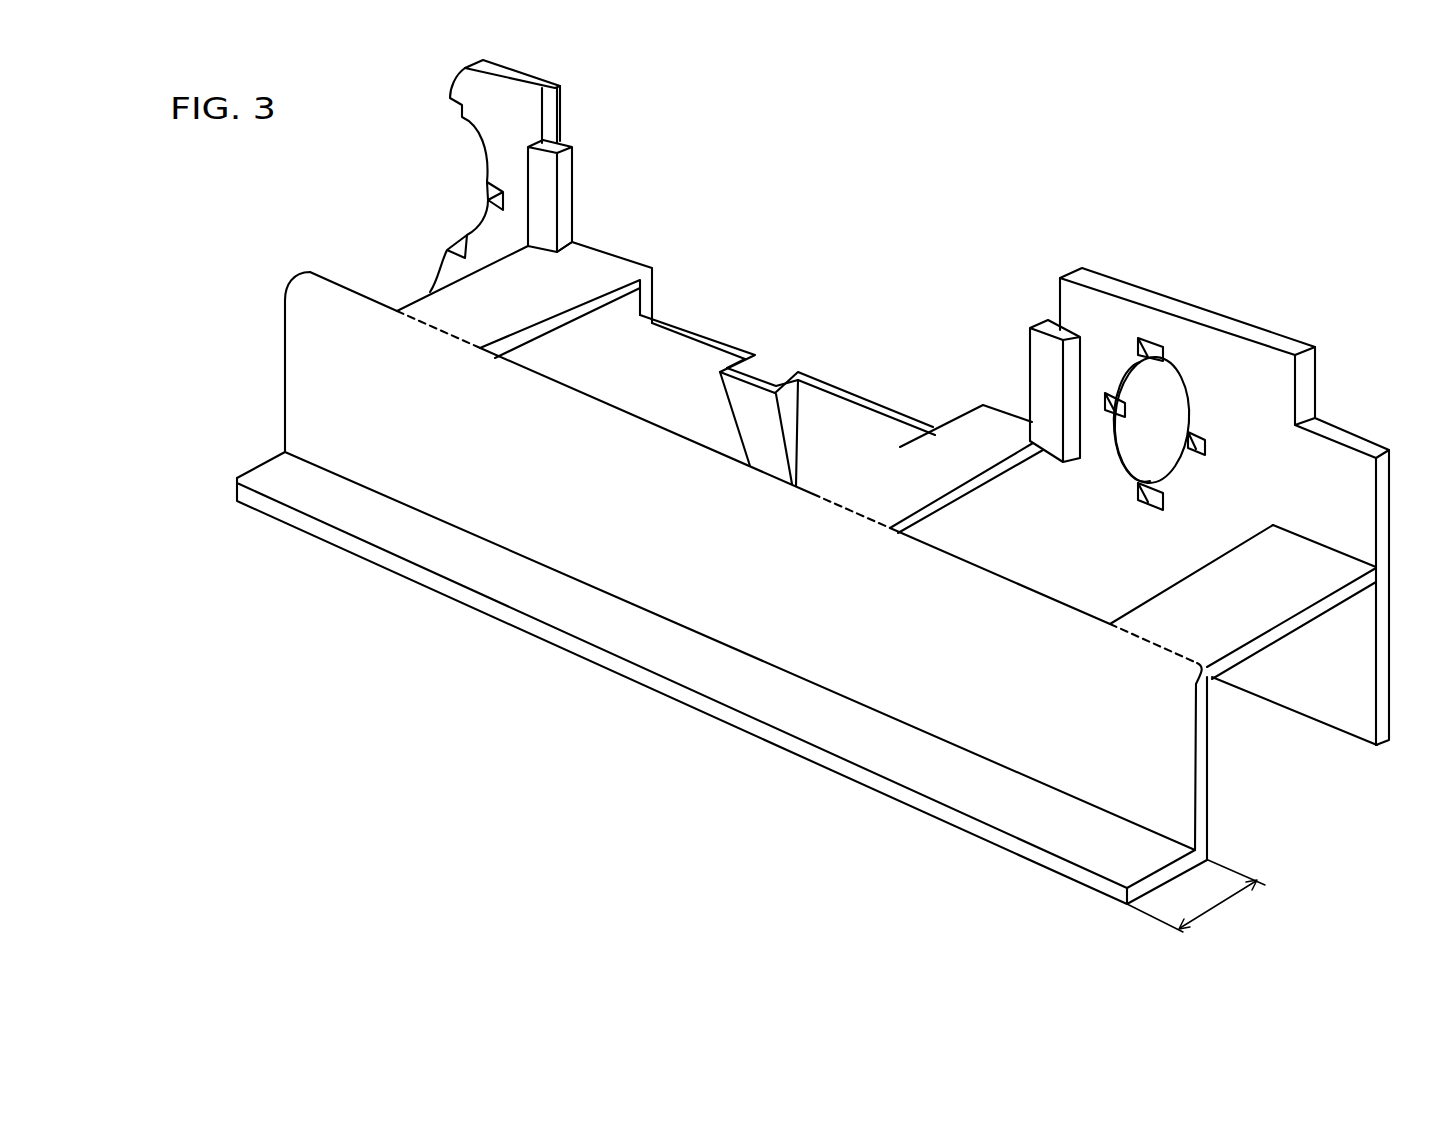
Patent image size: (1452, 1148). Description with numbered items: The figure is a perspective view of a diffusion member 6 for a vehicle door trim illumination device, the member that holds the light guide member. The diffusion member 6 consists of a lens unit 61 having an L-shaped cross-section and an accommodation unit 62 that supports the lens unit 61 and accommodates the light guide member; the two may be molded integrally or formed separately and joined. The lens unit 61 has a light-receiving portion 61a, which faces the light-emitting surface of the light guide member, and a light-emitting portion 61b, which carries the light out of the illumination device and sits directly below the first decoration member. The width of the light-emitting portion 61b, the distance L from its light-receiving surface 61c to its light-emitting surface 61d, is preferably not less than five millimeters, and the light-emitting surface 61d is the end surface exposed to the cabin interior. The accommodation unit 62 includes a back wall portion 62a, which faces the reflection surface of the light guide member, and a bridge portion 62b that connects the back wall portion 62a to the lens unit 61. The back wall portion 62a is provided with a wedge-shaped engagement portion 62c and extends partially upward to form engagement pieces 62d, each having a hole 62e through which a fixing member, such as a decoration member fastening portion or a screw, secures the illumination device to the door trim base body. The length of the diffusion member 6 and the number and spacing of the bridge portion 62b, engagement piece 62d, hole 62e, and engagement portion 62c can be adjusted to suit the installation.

The diffusion member 6 is at (982, 294).
The lens unit 61 is at (334, 380).
The light-receiving portion 61a is at (915, 657).
The light-emitting portion 61b is at (598, 627).
The light-receiving surface 61c is at (1205, 790).
The light-emitting surface 61d is at (952, 820).
The accommodation unit 62 is at (952, 450).
The back wall portion 62a is at (867, 440).
The bridge portion 62b is at (572, 272).
The engagement portion 62c is at (750, 418).
The engagement piece 62d is at (1218, 363).
The hole 62e is at (1112, 454).